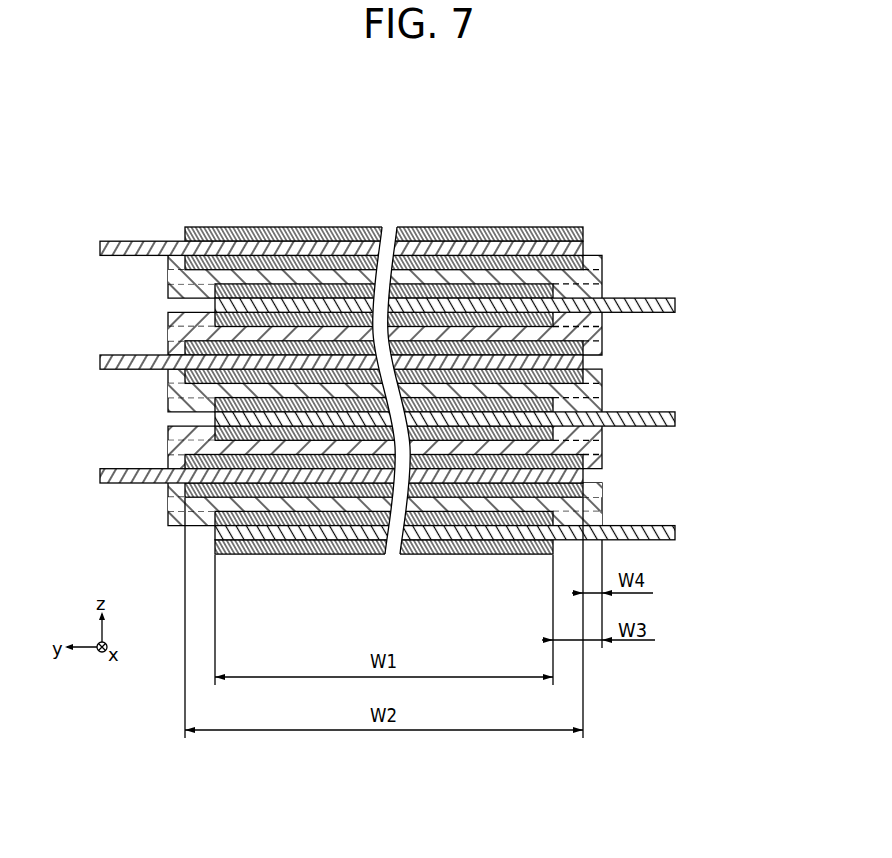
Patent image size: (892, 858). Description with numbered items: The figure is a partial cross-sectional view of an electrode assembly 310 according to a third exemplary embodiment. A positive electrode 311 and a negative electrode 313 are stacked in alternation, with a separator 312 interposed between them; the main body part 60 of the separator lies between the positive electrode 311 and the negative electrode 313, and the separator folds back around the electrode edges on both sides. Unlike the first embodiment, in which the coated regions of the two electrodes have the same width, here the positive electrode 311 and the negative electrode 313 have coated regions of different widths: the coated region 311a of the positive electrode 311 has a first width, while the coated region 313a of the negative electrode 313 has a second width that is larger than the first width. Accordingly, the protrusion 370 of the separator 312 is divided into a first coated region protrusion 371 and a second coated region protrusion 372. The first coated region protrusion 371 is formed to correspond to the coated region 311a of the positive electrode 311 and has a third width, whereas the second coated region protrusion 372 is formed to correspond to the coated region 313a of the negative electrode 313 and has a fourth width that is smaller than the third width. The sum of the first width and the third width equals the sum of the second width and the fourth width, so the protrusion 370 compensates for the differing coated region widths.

The electrode assembly 310 is at (408, 141).
The positive electrode 311 is at (673, 537).
The coated region of the positive electrode 311a is at (292, 548).
The separator 312 is at (165, 507).
The negative electrode 313 is at (112, 467).
The coated region of the negative electrode 313a is at (510, 468).
The main body part 60 is at (362, 507).
The protrusion 370 is at (672, 347).
The first coated region protrusion 371 is at (593, 522).
The second coated region protrusion 372 is at (598, 490).